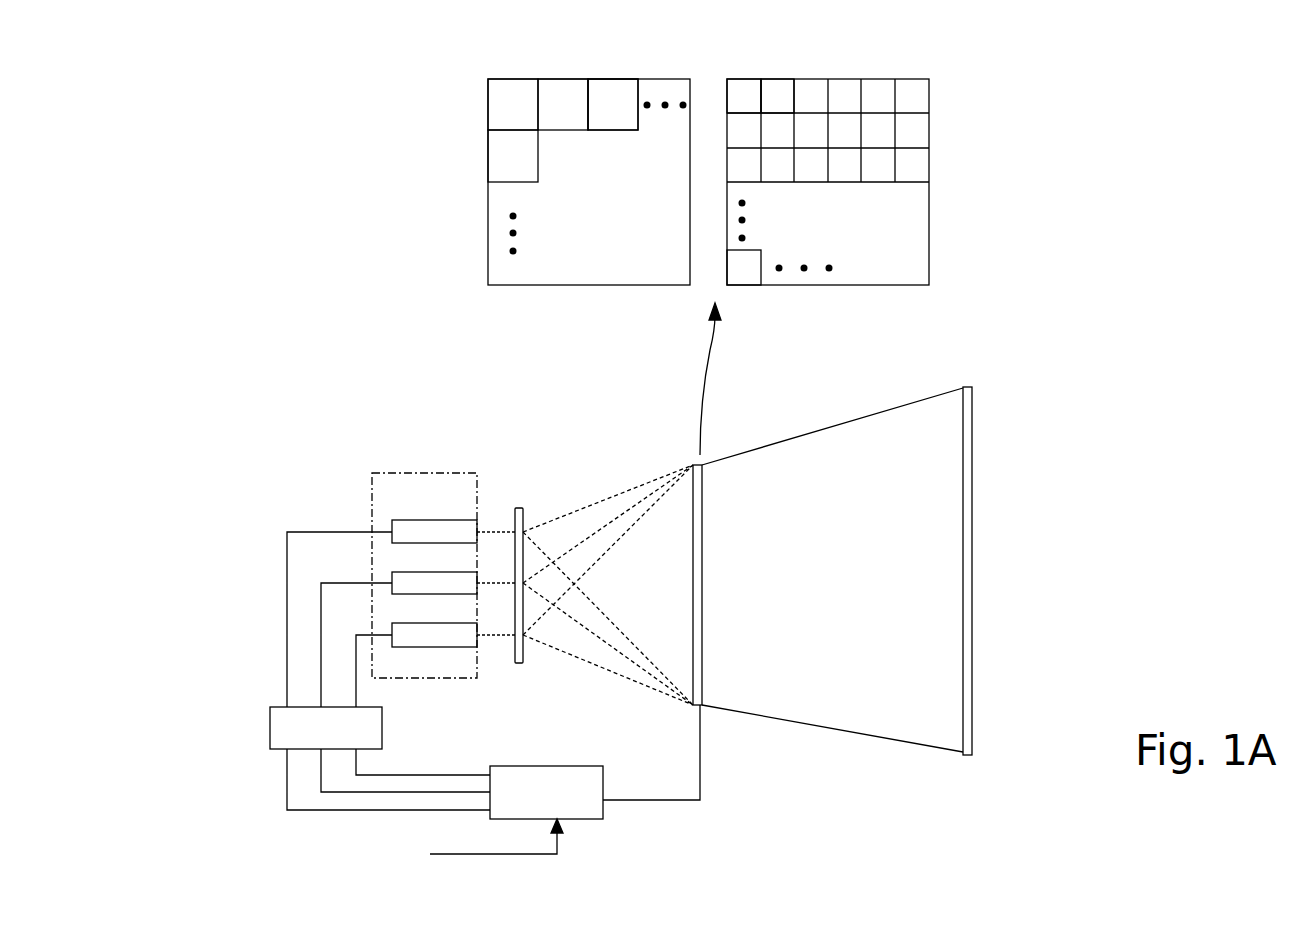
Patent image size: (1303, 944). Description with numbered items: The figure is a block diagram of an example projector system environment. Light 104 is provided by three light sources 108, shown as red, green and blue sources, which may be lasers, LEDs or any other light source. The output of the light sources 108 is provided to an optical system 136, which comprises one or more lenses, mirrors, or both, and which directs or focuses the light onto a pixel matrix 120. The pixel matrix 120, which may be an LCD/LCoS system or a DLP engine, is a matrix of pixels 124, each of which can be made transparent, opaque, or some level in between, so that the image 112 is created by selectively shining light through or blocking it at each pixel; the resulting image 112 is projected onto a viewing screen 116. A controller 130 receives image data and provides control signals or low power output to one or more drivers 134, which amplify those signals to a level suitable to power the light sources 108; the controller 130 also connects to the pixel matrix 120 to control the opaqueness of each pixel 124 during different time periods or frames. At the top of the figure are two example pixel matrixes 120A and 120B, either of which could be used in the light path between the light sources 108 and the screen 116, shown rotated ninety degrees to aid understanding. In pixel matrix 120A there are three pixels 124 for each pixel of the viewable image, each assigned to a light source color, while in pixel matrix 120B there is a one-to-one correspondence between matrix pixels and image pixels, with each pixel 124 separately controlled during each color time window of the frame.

The light 104 is at (590, 487).
The light sources 108 is at (478, 473).
The image 112 is at (923, 470).
The viewing screen 116 is at (963, 385).
The pixel matrix 120 is at (700, 706).
The pixel matrix 120A is at (952, 165).
The pixel matrix 120B is at (462, 217).
The pixel 124 is at (590, 78).
The controller 130 is at (597, 819).
The drivers 134 is at (270, 712).
The optical system 136 is at (521, 663).